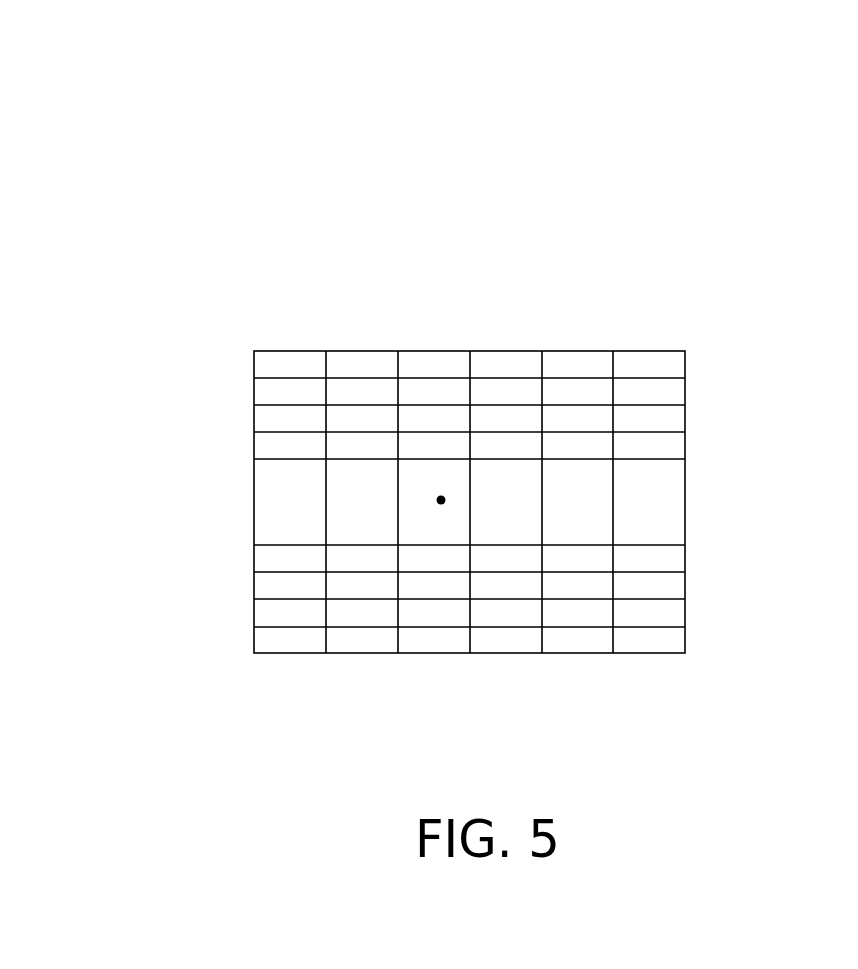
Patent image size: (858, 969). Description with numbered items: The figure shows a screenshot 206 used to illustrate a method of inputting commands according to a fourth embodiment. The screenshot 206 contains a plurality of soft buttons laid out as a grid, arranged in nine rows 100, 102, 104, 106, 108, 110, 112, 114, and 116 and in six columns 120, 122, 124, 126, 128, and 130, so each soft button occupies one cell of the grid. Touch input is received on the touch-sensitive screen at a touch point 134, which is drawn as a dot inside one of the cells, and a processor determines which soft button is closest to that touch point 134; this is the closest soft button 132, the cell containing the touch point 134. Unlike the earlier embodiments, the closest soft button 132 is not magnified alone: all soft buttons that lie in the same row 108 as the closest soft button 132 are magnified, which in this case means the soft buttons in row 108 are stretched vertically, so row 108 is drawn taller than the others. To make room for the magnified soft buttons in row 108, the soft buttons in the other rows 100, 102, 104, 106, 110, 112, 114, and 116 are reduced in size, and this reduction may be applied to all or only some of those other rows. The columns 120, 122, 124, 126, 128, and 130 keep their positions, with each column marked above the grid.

The row of soft buttons 100 is at (214, 370).
The row of soft buttons 102 is at (214, 397).
The row of soft buttons 104 is at (214, 425).
The row of soft buttons 106 is at (214, 452).
The row of soft buttons 108 is at (214, 511).
The row of soft buttons 110 is at (214, 566).
The row of soft buttons 112 is at (214, 594).
The row of soft buttons 114 is at (214, 620).
The row of soft buttons 116 is at (214, 647).
The column of soft buttons 120 is at (300, 320).
The column of soft buttons 122 is at (368, 320).
The column of soft buttons 124 is at (442, 320).
The column of soft buttons 126 is at (516, 320).
The column of soft buttons 128 is at (590, 320).
The column of soft buttons 130 is at (657, 320).
The closest soft button 132 is at (455, 478).
The touch point 134 is at (441, 504).
The screenshot 206 is at (689, 135).